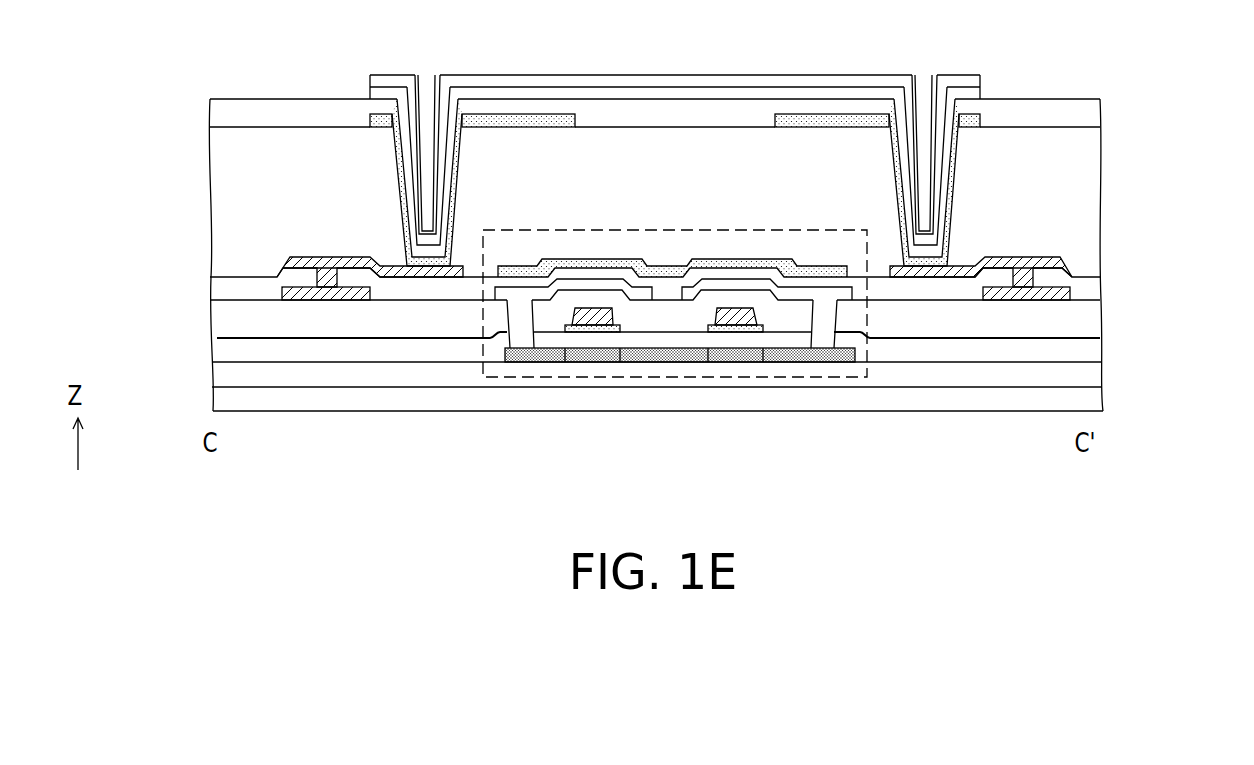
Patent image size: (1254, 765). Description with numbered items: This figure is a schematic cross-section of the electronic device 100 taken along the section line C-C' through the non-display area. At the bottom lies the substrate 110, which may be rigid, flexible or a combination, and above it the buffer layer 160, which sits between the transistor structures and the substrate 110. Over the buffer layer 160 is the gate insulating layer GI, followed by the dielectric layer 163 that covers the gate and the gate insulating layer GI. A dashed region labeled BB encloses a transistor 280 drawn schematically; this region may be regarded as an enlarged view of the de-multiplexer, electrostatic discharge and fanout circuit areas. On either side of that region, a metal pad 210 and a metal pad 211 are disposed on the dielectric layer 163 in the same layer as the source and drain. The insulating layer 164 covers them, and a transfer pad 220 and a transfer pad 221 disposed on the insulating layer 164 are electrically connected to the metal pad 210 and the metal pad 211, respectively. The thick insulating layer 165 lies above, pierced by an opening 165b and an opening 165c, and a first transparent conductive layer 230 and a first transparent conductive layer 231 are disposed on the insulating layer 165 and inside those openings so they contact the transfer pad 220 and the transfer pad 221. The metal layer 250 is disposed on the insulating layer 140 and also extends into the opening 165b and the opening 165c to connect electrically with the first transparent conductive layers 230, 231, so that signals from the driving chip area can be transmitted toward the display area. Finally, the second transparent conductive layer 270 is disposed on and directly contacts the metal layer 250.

The electronic device 100 is at (1232, 497).
The substrate 110 is at (1122, 432).
The buffer layer 160 is at (1122, 400).
The gate insulating layer GI is at (1122, 368).
The dielectric layer 163 is at (1122, 342).
The insulating layer 164 is at (1122, 277).
The insulating layer 165 is at (1122, 188).
The opening 165b is at (457, 41).
The opening 165c is at (953, 41).
The insulating layer 140 is at (1122, 115).
The metal pad 210 is at (282, 291).
The metal pad 211 is at (1120, 315).
The transfer pad 220 is at (287, 262).
The transfer pad 221 is at (1122, 250).
The first transparent conductive layer 230 is at (370, 119).
The first transparent conductive layer 231 is at (1122, 150).
The metal layer 250 is at (378, 93).
The second transparent conductive layer 270 is at (385, 82).
The transistor 280 is at (828, 440).